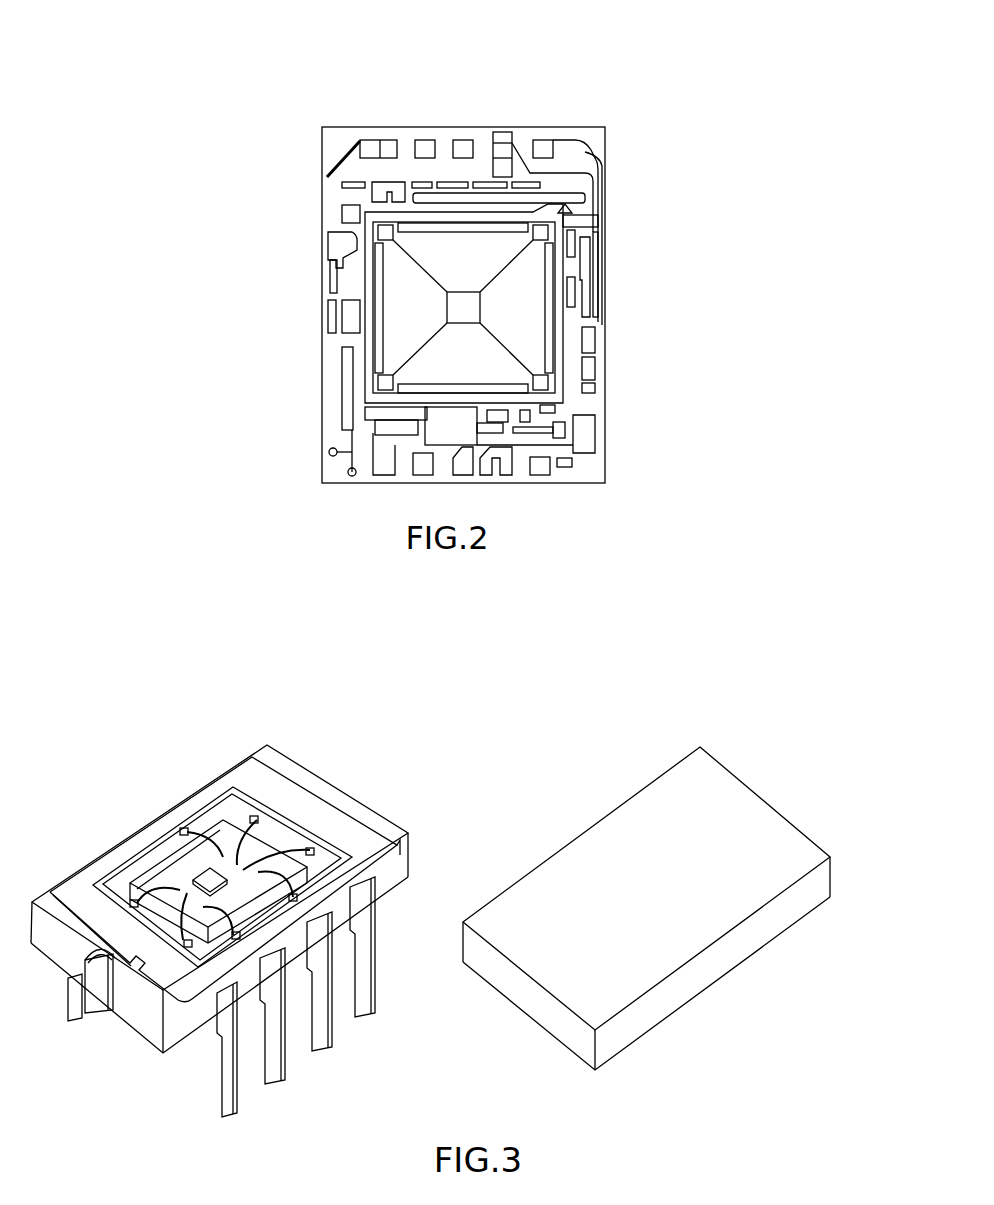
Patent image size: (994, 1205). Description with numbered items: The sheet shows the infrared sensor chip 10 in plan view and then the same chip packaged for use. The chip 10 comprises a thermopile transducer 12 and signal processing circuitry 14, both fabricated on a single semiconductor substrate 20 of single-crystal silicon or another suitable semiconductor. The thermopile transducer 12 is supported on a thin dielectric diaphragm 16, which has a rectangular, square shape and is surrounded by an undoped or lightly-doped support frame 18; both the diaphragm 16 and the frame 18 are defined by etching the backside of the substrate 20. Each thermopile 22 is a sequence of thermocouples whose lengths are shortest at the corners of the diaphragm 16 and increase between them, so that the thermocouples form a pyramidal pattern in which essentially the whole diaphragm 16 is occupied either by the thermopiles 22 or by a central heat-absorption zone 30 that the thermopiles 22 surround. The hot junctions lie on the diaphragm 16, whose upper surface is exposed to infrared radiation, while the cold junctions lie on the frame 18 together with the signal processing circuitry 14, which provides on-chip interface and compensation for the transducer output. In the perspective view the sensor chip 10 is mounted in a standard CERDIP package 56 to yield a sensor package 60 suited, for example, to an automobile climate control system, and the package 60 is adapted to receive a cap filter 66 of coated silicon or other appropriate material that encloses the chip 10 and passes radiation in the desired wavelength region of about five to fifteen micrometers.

In FIG. 2, the infrared sensor chip 10 is at (338, 105).
In FIG. 3, the infrared sensor chip 10 is at (165, 874).
In FIG. 2, the thermopile transducer 12 is at (560, 388).
In FIG. 2, the signal processing circuitry 14 is at (383, 432).
In FIG. 2, the diaphragm 16 is at (405, 317).
In FIG. 2, the support frame 18 is at (595, 245).
In FIG. 2, the semiconductor substrate 20 is at (587, 470).
In FIG. 2, the thermopile 22 is at (517, 323).
In FIG. 2, the central heat-absorption zone 30 is at (470, 305).
In FIG. 3, the CERDIP package 56 is at (165, 990).
In FIG. 3, the sensor package 60 is at (208, 893).
In FIG. 3, the cap filter 66 is at (752, 762).